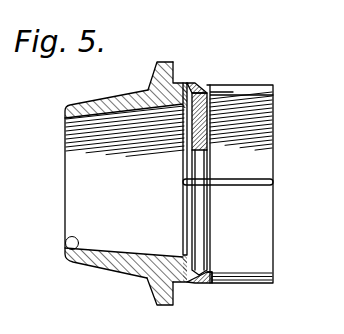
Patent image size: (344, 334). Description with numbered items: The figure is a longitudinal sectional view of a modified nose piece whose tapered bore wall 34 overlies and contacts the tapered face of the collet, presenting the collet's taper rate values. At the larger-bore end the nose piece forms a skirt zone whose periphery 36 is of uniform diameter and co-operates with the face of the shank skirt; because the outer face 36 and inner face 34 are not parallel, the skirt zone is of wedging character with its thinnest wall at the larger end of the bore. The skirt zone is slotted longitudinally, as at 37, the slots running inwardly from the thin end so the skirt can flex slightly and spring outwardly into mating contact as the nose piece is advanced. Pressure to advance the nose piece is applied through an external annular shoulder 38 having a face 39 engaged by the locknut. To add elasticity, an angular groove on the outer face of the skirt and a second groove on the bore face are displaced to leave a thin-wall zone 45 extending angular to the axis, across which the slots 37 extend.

The wall of the bore 34 is at (66, 244).
The periphery of the skirt zone 36 is at (232, 284).
The slots 37 is at (305, 176).
The external annular shoulder 38 is at (190, 62).
The face 39 is at (152, 78).
The thin-wall zone 45 is at (200, 92).